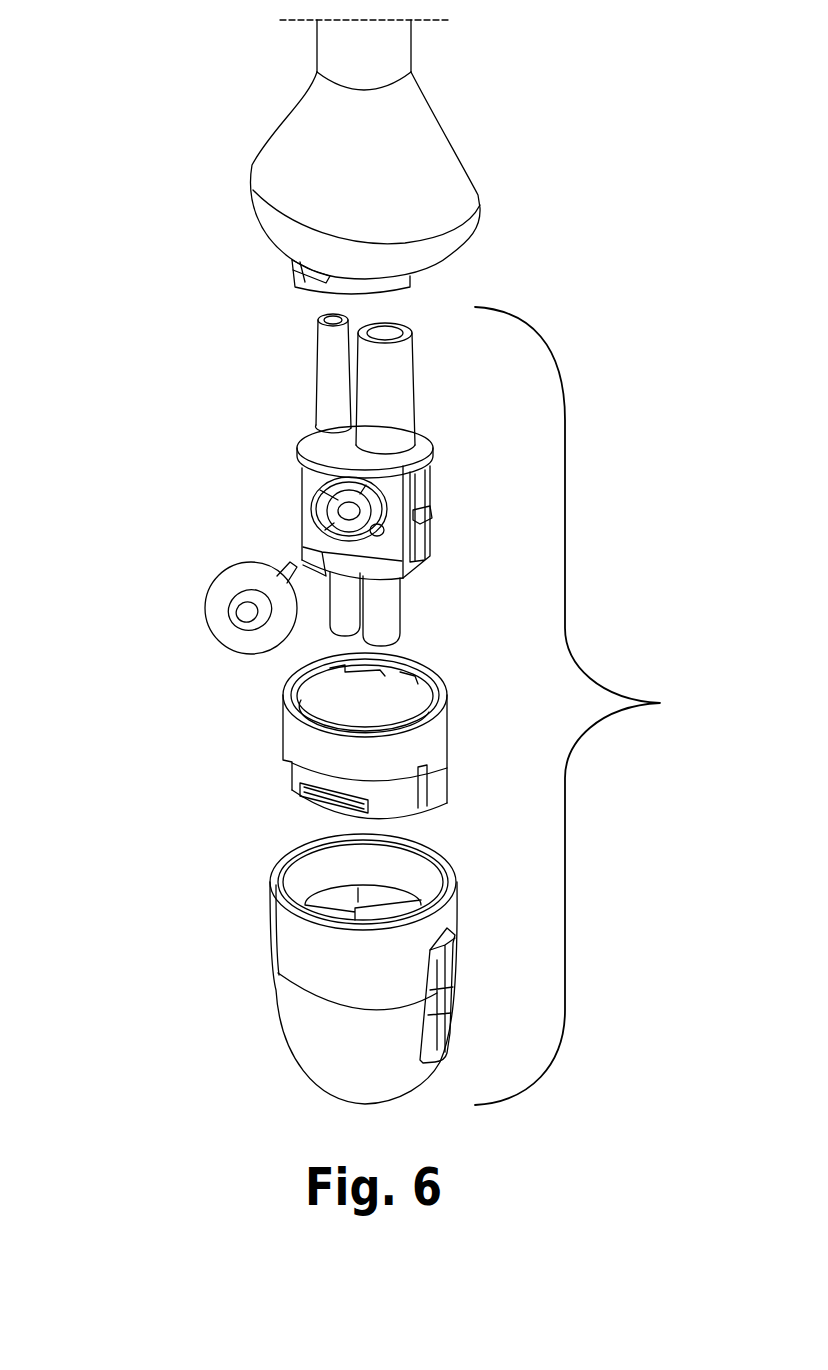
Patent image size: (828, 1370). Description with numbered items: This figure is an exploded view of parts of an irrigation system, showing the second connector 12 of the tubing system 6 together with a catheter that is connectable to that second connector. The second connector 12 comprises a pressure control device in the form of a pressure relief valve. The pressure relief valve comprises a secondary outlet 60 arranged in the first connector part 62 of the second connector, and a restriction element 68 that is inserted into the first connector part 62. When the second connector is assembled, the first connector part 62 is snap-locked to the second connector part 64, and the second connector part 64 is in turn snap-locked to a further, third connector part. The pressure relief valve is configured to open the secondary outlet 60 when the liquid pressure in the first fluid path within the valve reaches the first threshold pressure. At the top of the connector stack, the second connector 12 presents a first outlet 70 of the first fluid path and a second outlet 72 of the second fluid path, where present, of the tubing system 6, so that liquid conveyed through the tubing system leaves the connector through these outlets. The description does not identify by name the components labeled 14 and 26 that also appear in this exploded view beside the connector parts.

The tubing system 6 is at (152, 352).
The second connector 12 is at (656, 703).
The bulb body 14 is at (282, 137).
The legs 26 is at (402, 637).
The secondary outlet 60 is at (318, 492).
The first connector part 62 is at (303, 445).
The second connector part 64 is at (276, 968).
The restriction element 68 is at (222, 592).
The first outlet 70 is at (398, 322).
The second outlet 72 is at (330, 319).